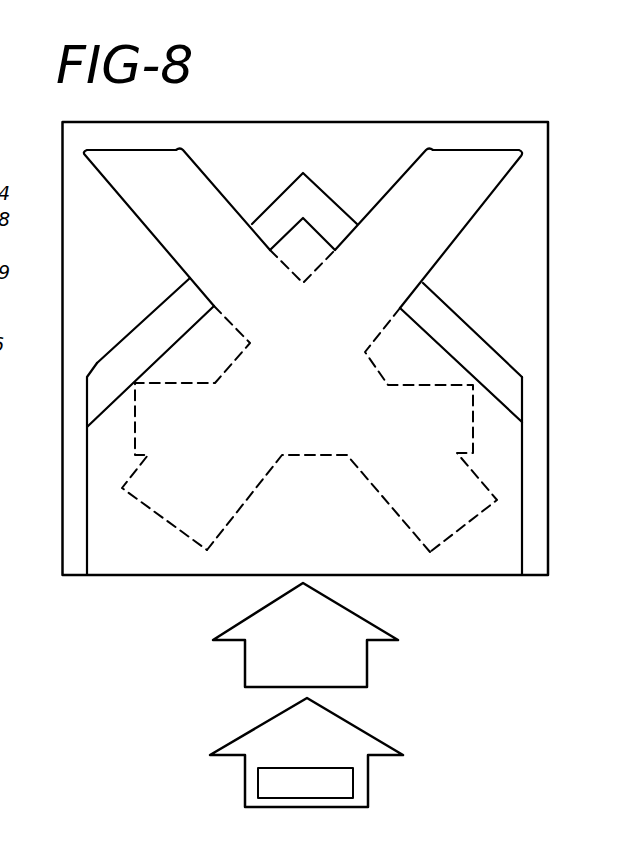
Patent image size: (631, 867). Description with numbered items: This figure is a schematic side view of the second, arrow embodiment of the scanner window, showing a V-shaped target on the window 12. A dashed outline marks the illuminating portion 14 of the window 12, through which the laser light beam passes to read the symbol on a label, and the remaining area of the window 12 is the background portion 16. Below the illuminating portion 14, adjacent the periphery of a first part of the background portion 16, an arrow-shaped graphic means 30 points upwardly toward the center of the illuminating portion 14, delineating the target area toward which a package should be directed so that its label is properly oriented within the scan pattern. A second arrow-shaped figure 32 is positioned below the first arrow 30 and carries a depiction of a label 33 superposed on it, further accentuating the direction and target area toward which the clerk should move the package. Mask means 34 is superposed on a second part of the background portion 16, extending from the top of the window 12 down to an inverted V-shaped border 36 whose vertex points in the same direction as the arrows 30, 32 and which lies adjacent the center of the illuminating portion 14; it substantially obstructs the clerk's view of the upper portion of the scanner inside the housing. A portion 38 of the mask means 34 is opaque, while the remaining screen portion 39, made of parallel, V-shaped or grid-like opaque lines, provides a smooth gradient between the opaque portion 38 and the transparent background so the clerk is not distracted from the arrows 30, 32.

The window 12 is at (448, 121).
The illuminating portion 14 is at (175, 199).
The background portion 16 is at (315, 159).
The arrow-shaped graphic means 30 is at (366, 620).
The second arrow-shaped figure 32 is at (363, 731).
The depiction of a label 33 is at (355, 783).
The mask means 34 is at (94, 242).
The inverted V-shaped border 36 is at (117, 397).
The opaque portion 38 is at (75, 300).
The screen portion 39 is at (108, 372).